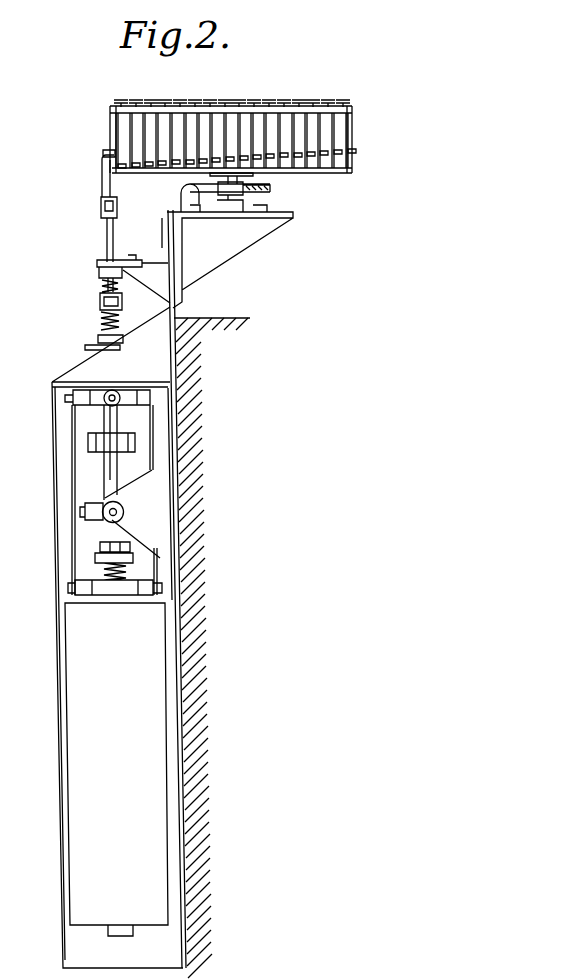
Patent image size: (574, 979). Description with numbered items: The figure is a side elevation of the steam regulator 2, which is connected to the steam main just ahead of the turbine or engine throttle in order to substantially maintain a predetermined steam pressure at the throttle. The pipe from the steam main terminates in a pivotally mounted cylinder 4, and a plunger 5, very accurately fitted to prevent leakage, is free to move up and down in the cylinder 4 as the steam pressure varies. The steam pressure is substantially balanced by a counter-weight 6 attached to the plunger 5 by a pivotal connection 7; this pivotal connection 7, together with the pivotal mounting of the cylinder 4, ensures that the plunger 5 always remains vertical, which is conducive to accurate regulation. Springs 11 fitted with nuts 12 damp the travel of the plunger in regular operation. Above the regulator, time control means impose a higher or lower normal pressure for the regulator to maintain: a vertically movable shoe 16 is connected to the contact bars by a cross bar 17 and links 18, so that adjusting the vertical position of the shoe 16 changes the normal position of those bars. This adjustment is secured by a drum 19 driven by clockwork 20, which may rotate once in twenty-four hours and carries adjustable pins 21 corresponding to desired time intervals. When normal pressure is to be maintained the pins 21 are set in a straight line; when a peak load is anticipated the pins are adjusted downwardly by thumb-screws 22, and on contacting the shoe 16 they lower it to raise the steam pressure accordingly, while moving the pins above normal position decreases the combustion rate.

The steam regulator 2 is at (56, 645).
The cylinder 4 is at (104, 475).
The plunger 5 is at (112, 423).
The counter-weight 6 is at (116, 769).
The pivotal connection 7 is at (65, 398).
The springs 11 is at (107, 312).
The nuts 12 is at (99, 274).
The shoe 16 is at (104, 152).
The cross bar 17 is at (101, 211).
The links 18 is at (107, 242).
The drum 19 is at (110, 123).
The clockwork 20 is at (181, 194).
The pins 21 is at (198, 166).
The thumb-screws 22 is at (264, 100).